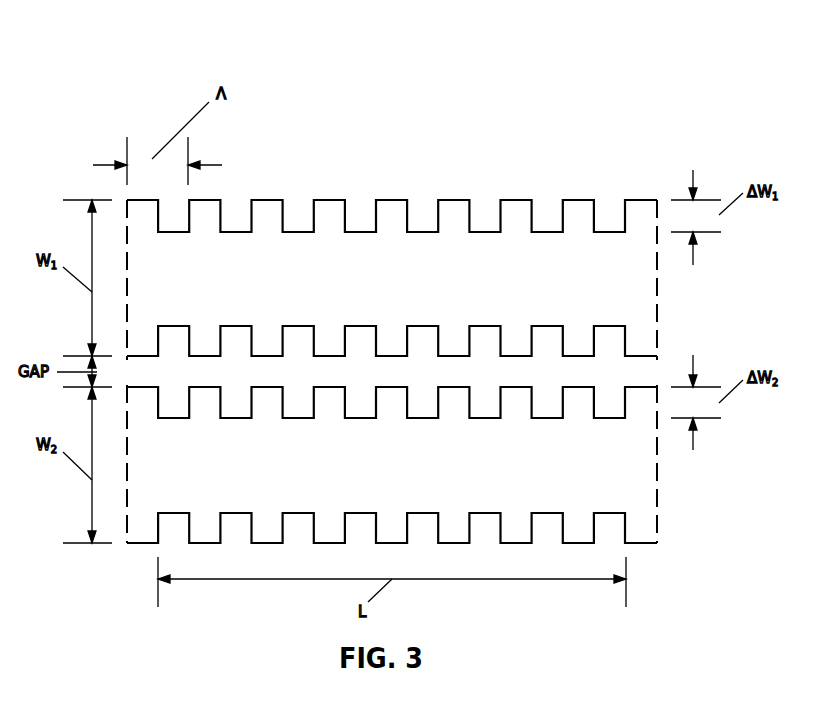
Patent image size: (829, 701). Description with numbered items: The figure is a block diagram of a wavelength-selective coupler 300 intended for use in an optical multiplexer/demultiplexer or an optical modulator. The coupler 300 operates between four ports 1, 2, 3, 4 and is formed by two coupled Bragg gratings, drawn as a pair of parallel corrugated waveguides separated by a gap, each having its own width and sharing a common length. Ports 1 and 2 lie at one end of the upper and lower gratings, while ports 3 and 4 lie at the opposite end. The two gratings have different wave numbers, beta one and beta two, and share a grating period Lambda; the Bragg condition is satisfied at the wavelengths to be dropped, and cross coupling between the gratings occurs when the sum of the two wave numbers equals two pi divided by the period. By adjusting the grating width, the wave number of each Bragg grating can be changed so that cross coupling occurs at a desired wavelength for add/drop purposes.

The wavelength-selective coupler 300 is at (460, 278).
The port 1 is at (136, 280).
The port 2 is at (136, 464).
The port 3 is at (645, 280).
The port 4 is at (645, 464).